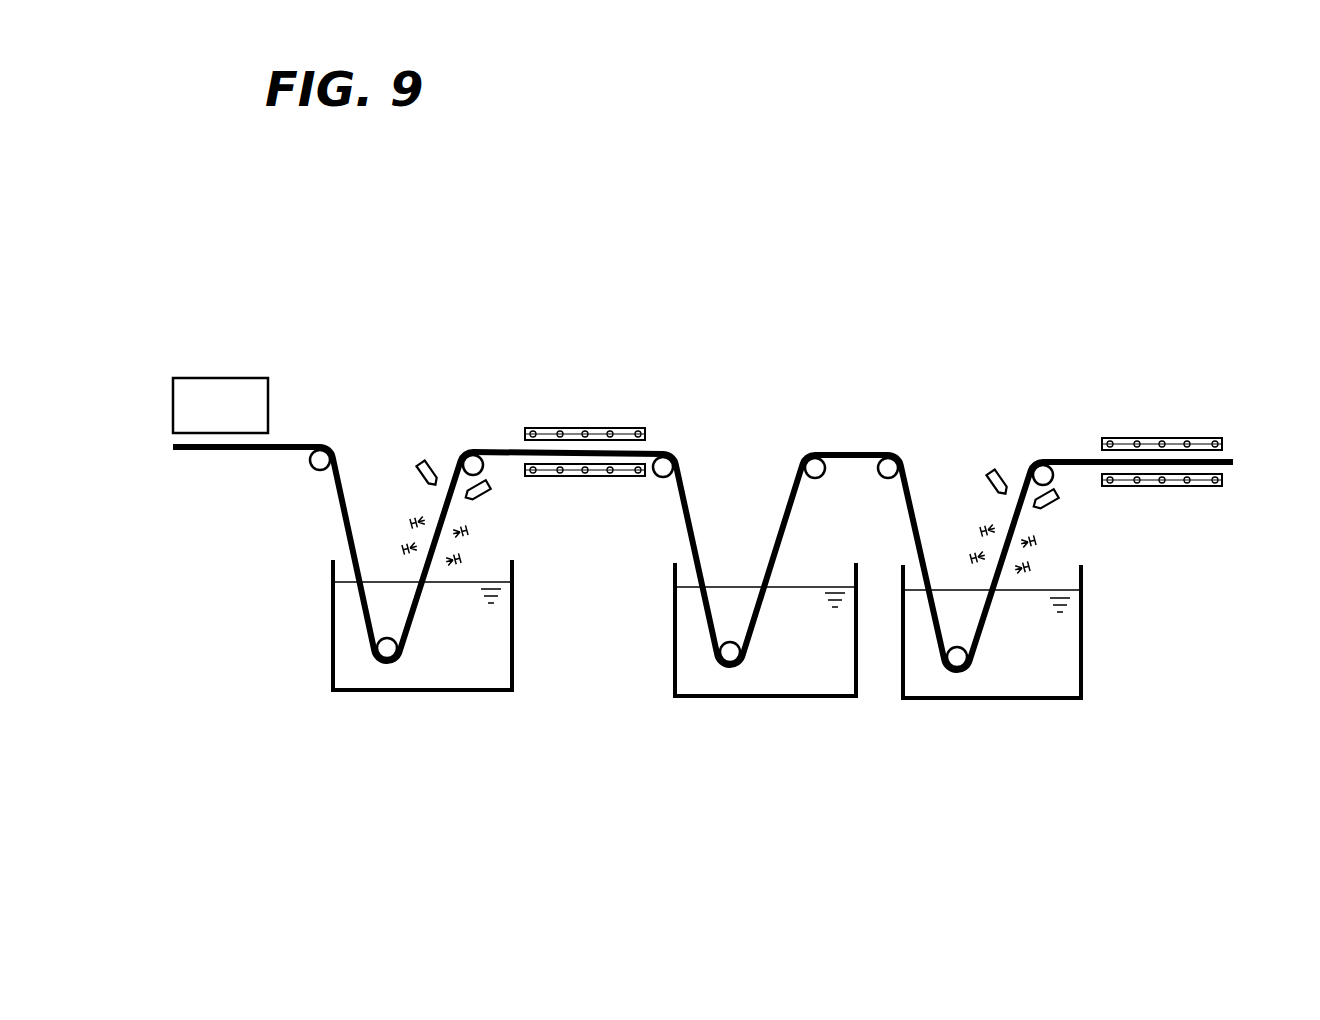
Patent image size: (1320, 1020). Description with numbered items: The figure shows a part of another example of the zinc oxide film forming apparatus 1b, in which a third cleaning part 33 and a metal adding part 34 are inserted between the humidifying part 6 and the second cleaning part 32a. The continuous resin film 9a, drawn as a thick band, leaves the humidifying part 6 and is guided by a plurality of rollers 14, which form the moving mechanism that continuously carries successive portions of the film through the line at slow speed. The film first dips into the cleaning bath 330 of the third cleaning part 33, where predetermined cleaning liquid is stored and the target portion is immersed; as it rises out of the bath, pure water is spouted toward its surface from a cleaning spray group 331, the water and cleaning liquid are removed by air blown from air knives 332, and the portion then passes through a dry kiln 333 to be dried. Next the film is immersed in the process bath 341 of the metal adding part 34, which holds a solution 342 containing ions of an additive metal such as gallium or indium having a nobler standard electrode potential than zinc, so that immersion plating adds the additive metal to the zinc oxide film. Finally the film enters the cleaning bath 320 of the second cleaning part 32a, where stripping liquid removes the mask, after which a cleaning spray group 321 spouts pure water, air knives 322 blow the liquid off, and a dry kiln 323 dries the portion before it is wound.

The zinc oxide film forming apparatus 1b is at (430, 226).
The humidifying part 6 is at (220, 375).
The resin film 9a is at (225, 450).
The rollers 14 is at (323, 470).
The third cleaning part 33 is at (513, 371).
The cleaning bath 330 is at (422, 692).
The cleaning spray group 331 is at (498, 533).
The air knives 332 is at (508, 483).
The dry kiln 333 is at (593, 428).
The metal adding part 34 is at (701, 762).
The process bath 341 is at (765, 698).
The solution 342 is at (813, 668).
The second cleaning part 32a is at (1083, 383).
The cleaning bath 320 is at (993, 700).
The cleaning spray group 321 is at (1068, 543).
The air knives 322 is at (1078, 493).
The dry kiln 323 is at (1163, 438).